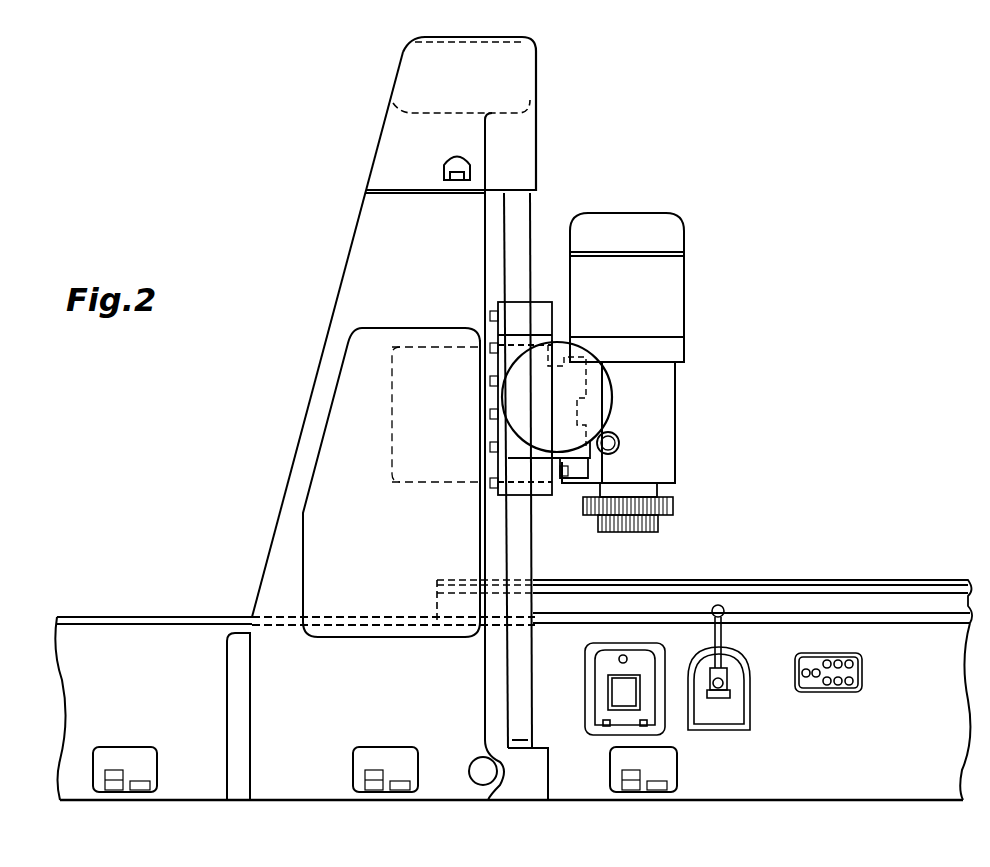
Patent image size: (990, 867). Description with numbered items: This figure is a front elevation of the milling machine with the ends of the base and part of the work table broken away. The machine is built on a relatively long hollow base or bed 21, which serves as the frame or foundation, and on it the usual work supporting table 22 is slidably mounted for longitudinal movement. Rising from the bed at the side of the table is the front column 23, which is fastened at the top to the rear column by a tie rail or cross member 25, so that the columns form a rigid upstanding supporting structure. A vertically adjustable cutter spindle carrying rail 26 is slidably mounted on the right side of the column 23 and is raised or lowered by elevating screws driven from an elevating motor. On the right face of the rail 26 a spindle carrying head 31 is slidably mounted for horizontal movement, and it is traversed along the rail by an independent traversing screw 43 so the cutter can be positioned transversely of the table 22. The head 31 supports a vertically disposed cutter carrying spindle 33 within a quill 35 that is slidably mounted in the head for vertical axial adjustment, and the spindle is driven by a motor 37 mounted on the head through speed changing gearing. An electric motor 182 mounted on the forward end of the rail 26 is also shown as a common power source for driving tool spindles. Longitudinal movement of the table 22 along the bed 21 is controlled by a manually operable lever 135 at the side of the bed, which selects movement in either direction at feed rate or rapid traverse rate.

The base or bed 21 is at (898, 640).
The work supporting table 22 is at (812, 582).
The front column 23 is at (358, 248).
The tie rail or cross member 25 is at (520, 86).
The cutter spindle carrying rail 26 is at (534, 314).
The spindle carrying head 31 is at (668, 393).
The cutter carrying spindle 33 is at (612, 512).
The quill 35 is at (636, 493).
The motor 37 is at (648, 230).
The traversing screw 43 is at (612, 437).
The manually operable lever 135 is at (725, 610).
The electric motor 182 is at (560, 376).